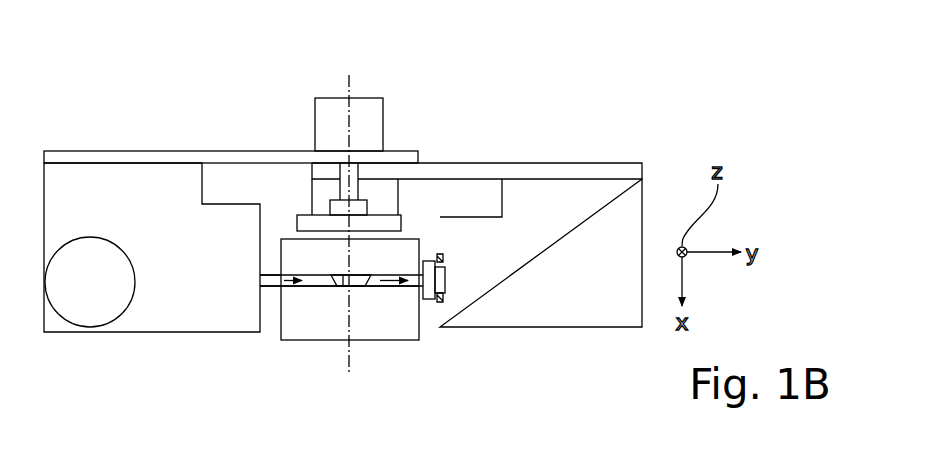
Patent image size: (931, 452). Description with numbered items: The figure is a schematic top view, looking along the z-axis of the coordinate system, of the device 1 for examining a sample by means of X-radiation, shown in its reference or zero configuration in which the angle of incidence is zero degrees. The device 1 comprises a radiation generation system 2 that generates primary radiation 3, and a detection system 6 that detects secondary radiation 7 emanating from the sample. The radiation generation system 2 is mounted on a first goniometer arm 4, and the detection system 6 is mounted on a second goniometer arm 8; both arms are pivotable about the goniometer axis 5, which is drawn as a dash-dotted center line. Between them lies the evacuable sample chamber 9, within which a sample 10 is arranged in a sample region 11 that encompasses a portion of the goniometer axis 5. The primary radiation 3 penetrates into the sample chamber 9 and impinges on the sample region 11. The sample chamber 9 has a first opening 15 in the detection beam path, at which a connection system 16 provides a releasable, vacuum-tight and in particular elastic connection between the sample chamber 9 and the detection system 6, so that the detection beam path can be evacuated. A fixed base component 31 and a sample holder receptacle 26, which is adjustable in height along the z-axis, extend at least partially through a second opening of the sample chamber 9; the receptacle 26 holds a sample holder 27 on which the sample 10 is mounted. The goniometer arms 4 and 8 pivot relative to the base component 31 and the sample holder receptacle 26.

The device 1 is at (351, 239).
The radiation generation system 2 is at (162, 357).
The primary radiation 3 is at (264, 284).
The first goniometer arm 4 is at (122, 158).
The goniometer axis 5 is at (349, 90).
The detection system 6 is at (548, 343).
The secondary radiation 7 is at (380, 275).
The second goniometer arm 8 is at (530, 172).
The sample chamber 9 is at (300, 360).
The sample 10 is at (343, 275).
The sample region 11 is at (362, 304).
The first opening 15 is at (427, 243).
The connection system 16 is at (427, 314).
The sample holder receptacle 26 is at (358, 190).
The sample holder 27 is at (340, 198).
The base component 31 is at (367, 123).